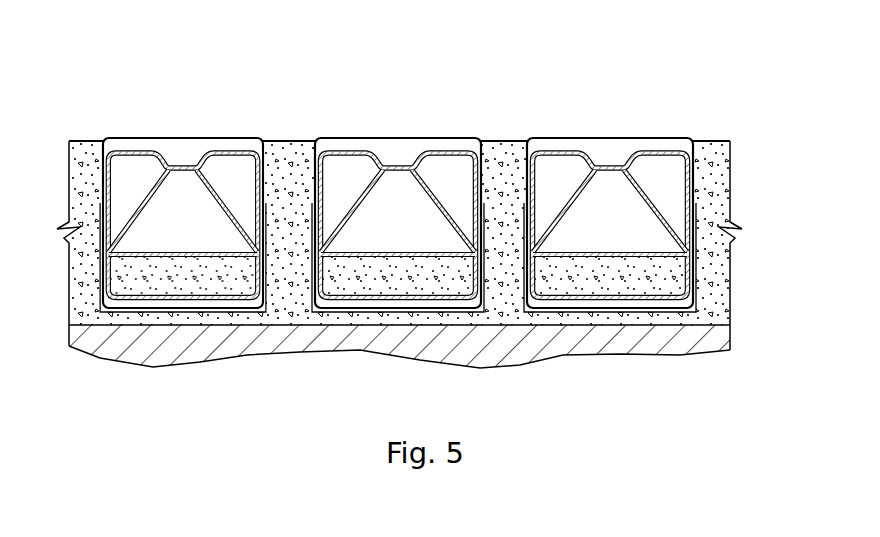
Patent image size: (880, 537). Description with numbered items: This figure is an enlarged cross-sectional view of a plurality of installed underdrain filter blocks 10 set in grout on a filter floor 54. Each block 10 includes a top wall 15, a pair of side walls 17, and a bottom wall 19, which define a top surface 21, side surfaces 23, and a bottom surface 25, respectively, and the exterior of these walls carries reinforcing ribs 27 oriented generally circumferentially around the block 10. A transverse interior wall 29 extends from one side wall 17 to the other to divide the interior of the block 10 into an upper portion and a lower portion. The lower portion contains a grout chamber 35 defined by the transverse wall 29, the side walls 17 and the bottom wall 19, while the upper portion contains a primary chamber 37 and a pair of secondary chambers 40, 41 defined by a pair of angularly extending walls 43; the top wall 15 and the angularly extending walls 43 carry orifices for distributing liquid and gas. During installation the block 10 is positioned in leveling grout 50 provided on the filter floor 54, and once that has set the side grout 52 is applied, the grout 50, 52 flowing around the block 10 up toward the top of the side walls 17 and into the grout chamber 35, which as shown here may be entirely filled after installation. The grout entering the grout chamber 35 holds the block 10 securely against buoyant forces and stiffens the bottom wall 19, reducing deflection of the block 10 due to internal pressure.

The underdrain filter block 10 is at (172, 113).
The top wall 15 is at (345, 148).
The side walls 17 is at (304, 146).
The bottom wall 19 is at (356, 302).
The top surface 21 is at (462, 151).
The side surfaces 23 is at (293, 176).
The bottom surface 25 is at (443, 300).
The reinforcing ribs 27 is at (486, 304).
The transverse interior wall 29 is at (392, 262).
The grout chamber 35 is at (335, 288).
The primary chamber 37 is at (379, 226).
The secondary chamber 40 is at (332, 189).
The secondary chamber 41 is at (439, 189).
The angularly extending walls 43 is at (385, 144).
The leveling grout 50 is at (240, 322).
The side grout 52 is at (278, 160).
The filter floor 54 is at (178, 328).